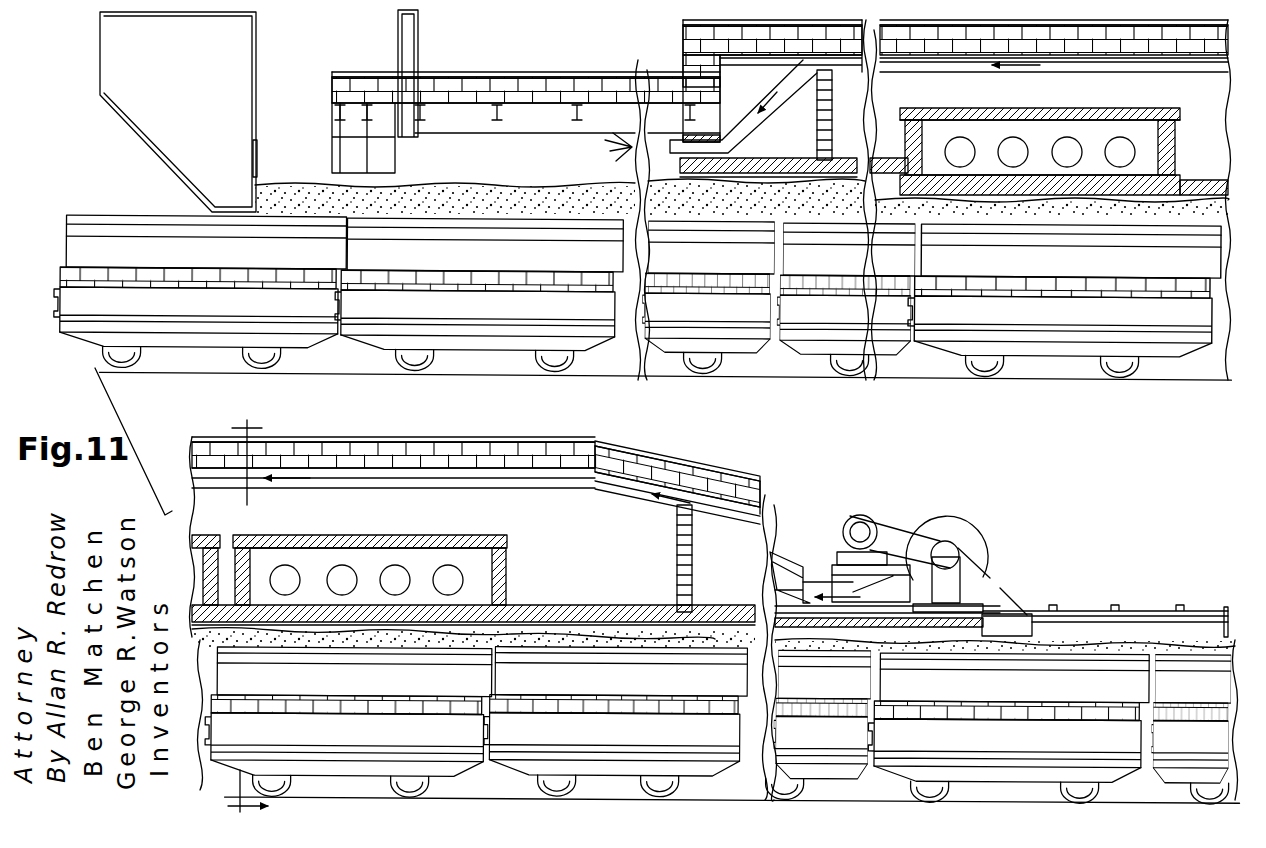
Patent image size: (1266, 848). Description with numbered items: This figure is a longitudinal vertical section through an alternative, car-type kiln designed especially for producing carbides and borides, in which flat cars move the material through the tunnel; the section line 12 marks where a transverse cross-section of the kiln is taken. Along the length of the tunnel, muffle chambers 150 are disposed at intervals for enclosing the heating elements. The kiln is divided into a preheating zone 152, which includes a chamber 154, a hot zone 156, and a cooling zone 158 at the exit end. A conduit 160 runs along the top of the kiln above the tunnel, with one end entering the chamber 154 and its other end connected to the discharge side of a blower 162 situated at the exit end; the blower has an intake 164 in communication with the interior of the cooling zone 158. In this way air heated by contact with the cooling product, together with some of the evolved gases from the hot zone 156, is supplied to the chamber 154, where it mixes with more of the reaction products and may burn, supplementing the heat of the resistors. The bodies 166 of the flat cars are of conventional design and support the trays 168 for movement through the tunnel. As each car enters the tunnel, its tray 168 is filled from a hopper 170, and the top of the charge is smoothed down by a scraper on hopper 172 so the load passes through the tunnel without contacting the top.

The section line 12- 12 is at (262, 612).
The muffle chambers 150 is at (1112, 112).
The preheating zone 152 is at (722, 12).
The chamber 154 is at (533, 152).
The hot zone 156 is at (430, 522).
The cooling zone 158 is at (737, 580).
The conduit 160 is at (742, 136).
The blower 162 is at (975, 542).
The intake 164 is at (1005, 625).
The bodies of the flat cars 166 is at (219, 317).
The trays 168 is at (118, 246).
The hopper 170 is at (196, 86).
The scraper on hopper 172 is at (258, 200).